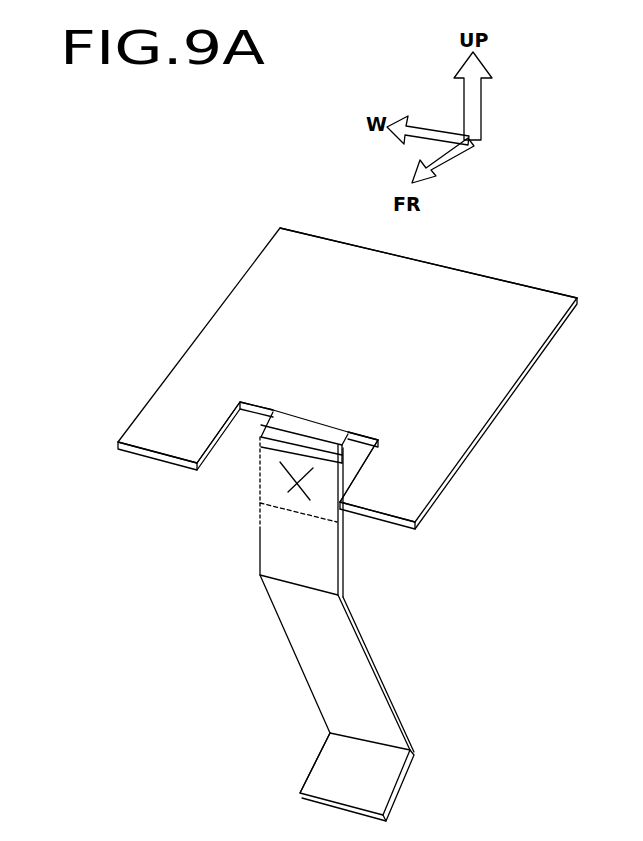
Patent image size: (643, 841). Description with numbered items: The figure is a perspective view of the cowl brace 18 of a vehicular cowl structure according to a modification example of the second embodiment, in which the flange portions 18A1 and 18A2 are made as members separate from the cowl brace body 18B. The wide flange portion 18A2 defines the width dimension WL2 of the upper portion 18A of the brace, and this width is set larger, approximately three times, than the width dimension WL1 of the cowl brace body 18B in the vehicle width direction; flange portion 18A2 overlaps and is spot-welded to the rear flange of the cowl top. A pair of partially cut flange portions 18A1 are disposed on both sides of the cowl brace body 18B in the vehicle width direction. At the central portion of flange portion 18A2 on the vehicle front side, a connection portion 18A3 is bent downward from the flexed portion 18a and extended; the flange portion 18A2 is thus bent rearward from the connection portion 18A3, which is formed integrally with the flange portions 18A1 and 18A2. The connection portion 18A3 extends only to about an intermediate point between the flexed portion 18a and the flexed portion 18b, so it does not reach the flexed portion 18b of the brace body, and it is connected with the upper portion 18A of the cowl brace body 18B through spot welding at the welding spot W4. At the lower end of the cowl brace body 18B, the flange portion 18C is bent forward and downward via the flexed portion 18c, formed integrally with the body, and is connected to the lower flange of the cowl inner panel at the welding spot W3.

The cowl brace 18 is at (204, 303).
The upper portion 18A is at (465, 403).
The flange portion 18A1 is at (163, 435).
The flange portion 18A2 is at (547, 302).
The connection portion 18A3 is at (290, 427).
The flexed portion 18a is at (307, 428).
The cowl brace body 18B is at (262, 552).
The flexed portion 18b is at (298, 588).
The flange portion 18C is at (377, 785).
The flexed portion 18c is at (318, 761).
The welding spot W3 is at (372, 752).
The welding spot W4 is at (272, 486).
The width dimension WL1 is at (338, 597).
The width dimension WL2 is at (600, 266).